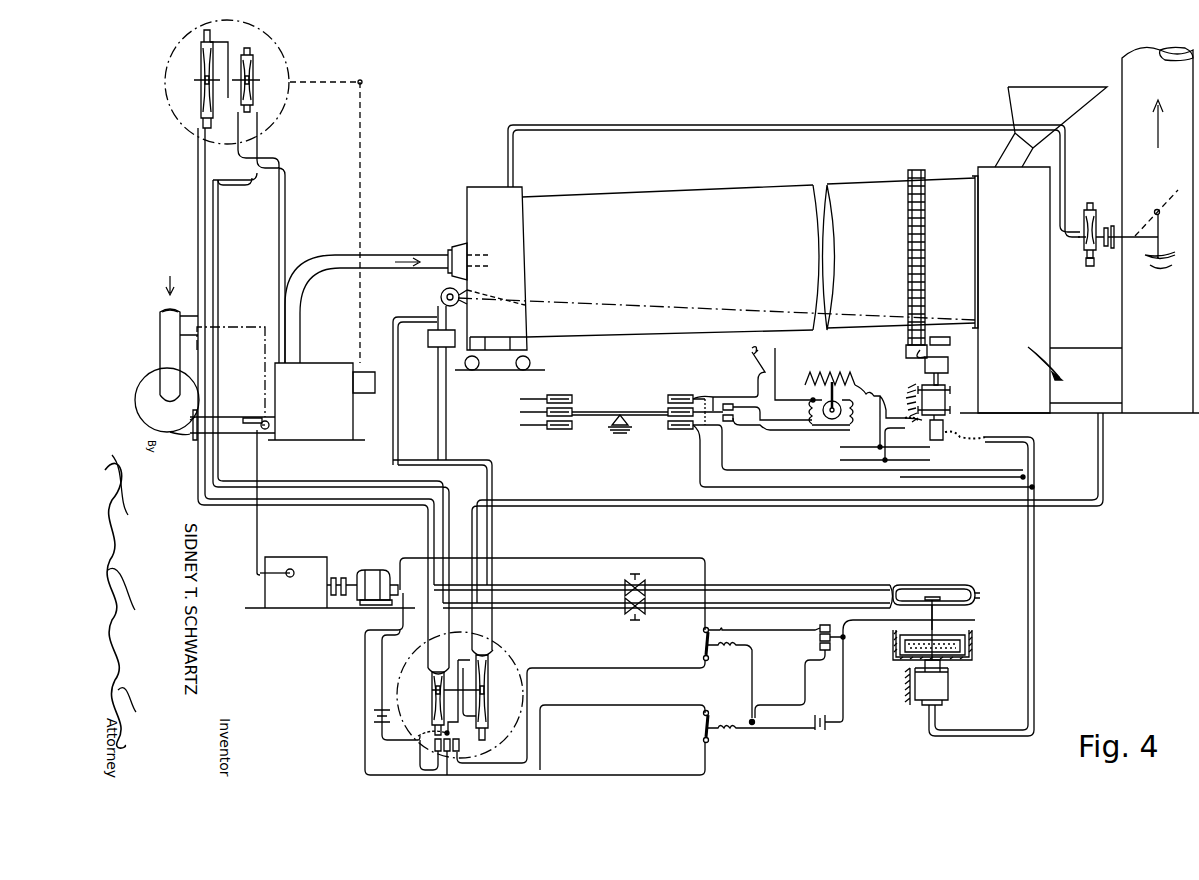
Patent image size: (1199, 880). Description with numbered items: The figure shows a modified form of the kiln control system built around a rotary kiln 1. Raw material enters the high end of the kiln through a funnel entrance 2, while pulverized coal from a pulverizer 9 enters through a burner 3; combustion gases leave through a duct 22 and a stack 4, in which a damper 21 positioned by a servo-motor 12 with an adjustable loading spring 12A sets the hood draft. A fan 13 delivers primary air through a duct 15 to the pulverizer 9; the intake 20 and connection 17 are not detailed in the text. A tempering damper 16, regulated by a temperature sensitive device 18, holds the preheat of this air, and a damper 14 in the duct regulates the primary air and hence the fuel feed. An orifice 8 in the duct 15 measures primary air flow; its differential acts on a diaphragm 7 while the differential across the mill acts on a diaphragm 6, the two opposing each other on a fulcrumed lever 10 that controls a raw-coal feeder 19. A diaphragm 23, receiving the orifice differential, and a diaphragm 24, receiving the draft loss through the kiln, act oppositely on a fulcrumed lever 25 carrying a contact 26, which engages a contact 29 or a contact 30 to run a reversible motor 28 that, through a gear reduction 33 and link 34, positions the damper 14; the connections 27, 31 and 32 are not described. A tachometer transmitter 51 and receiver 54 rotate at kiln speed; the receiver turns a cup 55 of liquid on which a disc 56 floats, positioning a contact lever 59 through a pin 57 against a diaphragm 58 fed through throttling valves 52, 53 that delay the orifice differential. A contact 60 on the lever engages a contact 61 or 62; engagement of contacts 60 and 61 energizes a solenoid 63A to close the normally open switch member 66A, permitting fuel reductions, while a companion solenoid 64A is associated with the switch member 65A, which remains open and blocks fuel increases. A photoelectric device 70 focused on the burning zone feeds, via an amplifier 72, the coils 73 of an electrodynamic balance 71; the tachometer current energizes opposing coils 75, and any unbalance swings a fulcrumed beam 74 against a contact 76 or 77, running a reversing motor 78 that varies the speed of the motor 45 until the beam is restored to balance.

The rotary kiln 1 is at (722, 194).
The funnel entrance 2 is at (1008, 90).
The burner 3 is at (454, 250).
The stack 4 is at (1122, 58).
The pressure sensitive diaphragm 6 is at (250, 66).
The pressure sensitive diaphragm 7 is at (201, 70).
The orifice 8 is at (228, 432).
The pulverizer 9 is at (318, 363).
The fulcrumed lever 10 is at (240, 50).
The servo-motor 12 is at (1093, 205).
The adjustable loading spring 12A is at (1098, 264).
The fan 13 is at (142, 388).
The damper 14 is at (243, 412).
The duct 15 is at (264, 418).
The tempering damper 16 is at (198, 312).
The inlet connection 17 is at (180, 327).
The temperature sensitive device 18 is at (272, 423).
The feeder 19 is at (364, 394).
The air intake 20 is at (160, 318).
The damper 21 is at (1170, 196).
The duct 22 is at (1076, 348).
The diaphragm 23 is at (500, 650).
The diaphragm 24 is at (492, 676).
The fulcrumed lever 25 is at (482, 712).
The contact 26 is at (448, 768).
The conductor 27 is at (380, 662).
The reversible motor 28 is at (373, 570).
The contact 29 is at (436, 746).
The contact 30 is at (460, 750).
The circuit 31 is at (586, 706).
The circuit 32 is at (590, 668).
The gear reduction 33 is at (298, 557).
The link 34 is at (255, 530).
The motor 45 is at (947, 400).
The tachometer transmitter 51 is at (942, 440).
The adjustable throttling valve 52 is at (648, 582).
The adjustable throttling valve 53 is at (648, 610).
The tachometer receiver 54 is at (950, 688).
The cup 55 is at (970, 657).
The disc 56 is at (970, 637).
The pin 57 is at (935, 624).
The diaphragm 58 is at (945, 588).
The contact lever 59 is at (860, 622).
The contact 60 is at (818, 638).
The contact 61 is at (820, 628).
The contact 62 is at (830, 650).
The solenoid 63A is at (743, 660).
The coil 64A is at (728, 735).
The switch member 65A is at (700, 728).
The switch member 66A is at (700, 645).
The photoelectric device 70 is at (441, 292).
The electrodynamic balance 71 is at (632, 397).
The amplifier 72 is at (430, 347).
The coils 73 is at (546, 420).
The fulcrumed beam 74 is at (590, 418).
The coils 75 is at (706, 395).
The contact 76 is at (730, 405).
The contact 77 is at (720, 430).
The reversing motor 78 is at (828, 420).